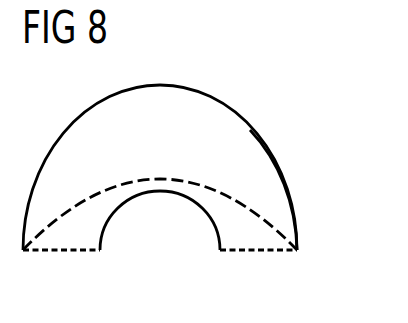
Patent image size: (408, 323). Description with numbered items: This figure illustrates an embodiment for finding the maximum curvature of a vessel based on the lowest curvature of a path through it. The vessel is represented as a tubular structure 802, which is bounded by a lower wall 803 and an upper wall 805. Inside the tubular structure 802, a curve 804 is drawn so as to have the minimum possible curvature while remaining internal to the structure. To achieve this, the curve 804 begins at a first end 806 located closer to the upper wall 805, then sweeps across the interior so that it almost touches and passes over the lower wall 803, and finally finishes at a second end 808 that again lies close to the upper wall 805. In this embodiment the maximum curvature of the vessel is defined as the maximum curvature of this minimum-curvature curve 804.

The tubular structure 802 is at (243, 125).
The lower wall 803 is at (202, 208).
The curve 804 is at (283, 233).
The upper wall 805 is at (287, 181).
The first end 806 is at (68, 253).
The second end 808 is at (257, 250).